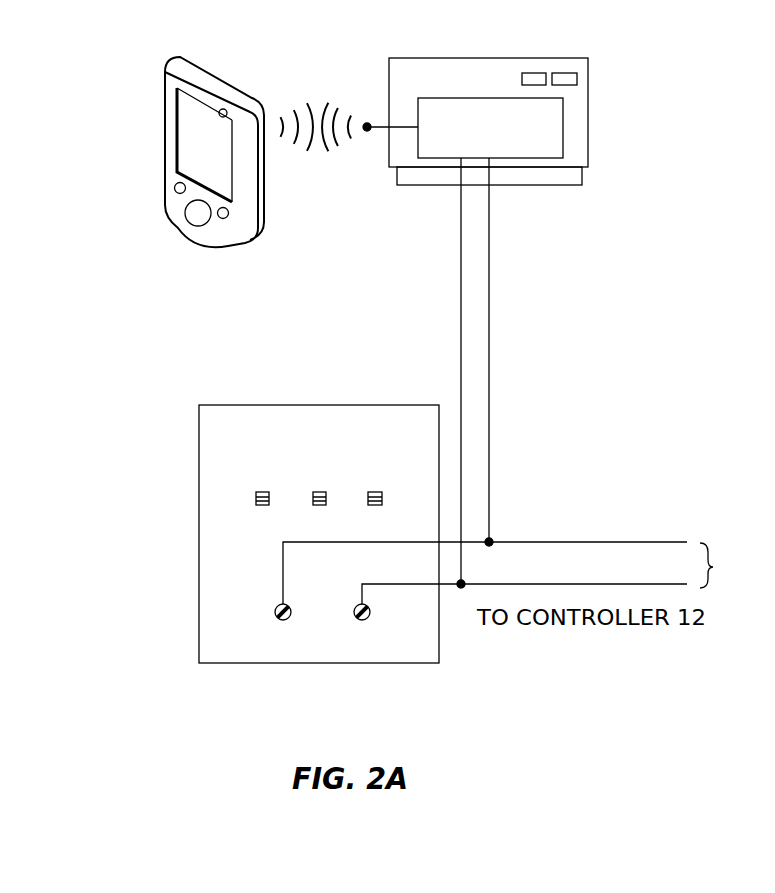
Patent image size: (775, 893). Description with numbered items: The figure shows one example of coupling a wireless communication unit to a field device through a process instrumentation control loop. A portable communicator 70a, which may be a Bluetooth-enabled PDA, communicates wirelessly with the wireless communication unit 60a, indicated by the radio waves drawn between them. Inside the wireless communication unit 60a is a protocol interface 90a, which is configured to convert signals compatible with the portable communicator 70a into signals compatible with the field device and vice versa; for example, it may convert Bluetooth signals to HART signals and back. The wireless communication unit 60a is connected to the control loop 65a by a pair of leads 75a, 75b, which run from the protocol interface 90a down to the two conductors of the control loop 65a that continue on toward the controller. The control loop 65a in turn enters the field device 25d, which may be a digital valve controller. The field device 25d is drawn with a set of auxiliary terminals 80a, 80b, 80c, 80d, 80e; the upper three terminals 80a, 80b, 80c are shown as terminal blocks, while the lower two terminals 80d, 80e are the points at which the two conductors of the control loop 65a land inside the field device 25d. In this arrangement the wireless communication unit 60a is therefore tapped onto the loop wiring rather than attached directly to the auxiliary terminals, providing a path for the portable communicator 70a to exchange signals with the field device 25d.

The portable communicator 70a is at (255, 95).
The wireless communication unit 60a is at (433, 57).
The protocol interface 90a is at (430, 97).
The lead 75a is at (460, 285).
The lead 75b is at (490, 257).
The field device 25d is at (363, 405).
The auxiliary terminal 80a is at (262, 489).
The auxiliary terminal 80b is at (318, 506).
The auxiliary terminal 80c is at (375, 489).
The auxiliary terminal 80d is at (280, 619).
The auxiliary terminal 80e is at (361, 619).
The control loop 65a is at (524, 573).